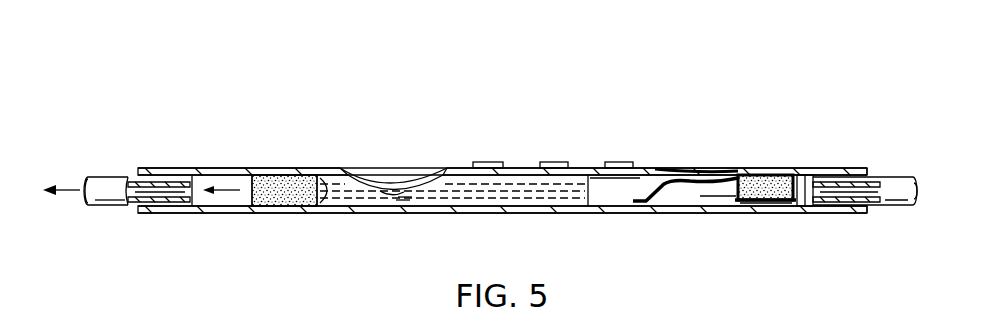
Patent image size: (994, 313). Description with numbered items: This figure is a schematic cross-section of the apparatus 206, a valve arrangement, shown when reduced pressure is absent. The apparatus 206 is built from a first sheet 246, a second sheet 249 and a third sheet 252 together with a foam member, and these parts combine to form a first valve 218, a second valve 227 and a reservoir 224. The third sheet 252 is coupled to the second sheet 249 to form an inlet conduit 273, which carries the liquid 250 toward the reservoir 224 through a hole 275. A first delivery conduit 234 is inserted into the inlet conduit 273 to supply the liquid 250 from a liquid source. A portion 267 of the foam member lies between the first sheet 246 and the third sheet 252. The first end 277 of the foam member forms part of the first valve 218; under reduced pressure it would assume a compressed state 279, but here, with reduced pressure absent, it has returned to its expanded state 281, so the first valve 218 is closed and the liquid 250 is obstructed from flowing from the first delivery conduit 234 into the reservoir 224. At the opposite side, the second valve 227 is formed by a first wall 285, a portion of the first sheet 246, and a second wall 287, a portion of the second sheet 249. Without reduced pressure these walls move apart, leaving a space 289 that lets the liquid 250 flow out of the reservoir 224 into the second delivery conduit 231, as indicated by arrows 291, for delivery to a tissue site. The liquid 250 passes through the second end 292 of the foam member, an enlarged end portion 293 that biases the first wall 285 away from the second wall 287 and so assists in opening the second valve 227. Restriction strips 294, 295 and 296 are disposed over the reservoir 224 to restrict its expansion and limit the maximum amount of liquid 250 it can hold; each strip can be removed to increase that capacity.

The apparatus 206 is at (160, 106).
The second delivery conduit 231 is at (105, 177).
The first delivery conduit 234 is at (893, 177).
The first sheet 246 is at (210, 168).
The second sheet 249 is at (612, 207).
The reservoir 224 is at (467, 175).
The arrows 291 is at (60, 193).
The second end 292 is at (278, 175).
The enlarged end portion 293 is at (330, 172).
The first wall 285 is at (387, 180).
The second wall 287 is at (392, 195).
The second valve 227 is at (405, 197).
The space 289 is at (400, 200).
The liquid 250 is at (513, 193).
The restriction strip 294 is at (488, 163).
The restriction strip 295 is at (553, 163).
The restriction strip 296 is at (618, 163).
The third sheet 252 is at (645, 172).
The hole 275 is at (660, 207).
The first end 277 is at (748, 168).
The inlet conduit 273 is at (723, 195).
The compressed state 279 is at (762, 175).
The expanded state 281 is at (787, 208).
The first valve 218 is at (768, 205).
The portion 267 is at (793, 168).